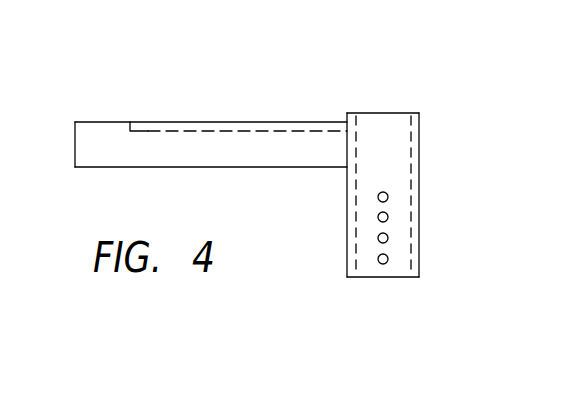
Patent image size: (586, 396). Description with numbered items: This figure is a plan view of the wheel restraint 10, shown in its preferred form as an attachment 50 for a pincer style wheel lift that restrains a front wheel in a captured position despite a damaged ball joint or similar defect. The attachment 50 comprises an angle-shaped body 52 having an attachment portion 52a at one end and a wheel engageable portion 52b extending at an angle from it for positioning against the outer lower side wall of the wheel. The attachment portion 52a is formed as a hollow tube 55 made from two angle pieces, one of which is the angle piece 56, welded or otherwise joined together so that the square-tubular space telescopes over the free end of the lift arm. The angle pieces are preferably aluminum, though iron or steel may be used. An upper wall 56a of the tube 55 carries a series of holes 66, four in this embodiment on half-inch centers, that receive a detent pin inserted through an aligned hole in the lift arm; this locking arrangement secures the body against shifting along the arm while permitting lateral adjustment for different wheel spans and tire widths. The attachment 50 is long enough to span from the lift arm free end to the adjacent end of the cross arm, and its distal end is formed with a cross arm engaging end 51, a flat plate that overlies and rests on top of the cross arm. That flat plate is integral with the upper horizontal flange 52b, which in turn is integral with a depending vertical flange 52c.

The wheel restraint 10 is at (212, 109).
The attachment 50 is at (437, 107).
The cross arm engaging end 51 is at (85, 155).
The angle-shaped body 52 is at (341, 104).
The attachment portion 52a is at (492, 149).
The wheel engageable portion 52b is at (158, 152).
The vertical flange 52c is at (147, 125).
The hollow tube 55 is at (338, 193).
The angle piece 56 is at (393, 121).
The upper wall 56a is at (388, 138).
The holes 66 is at (392, 212).